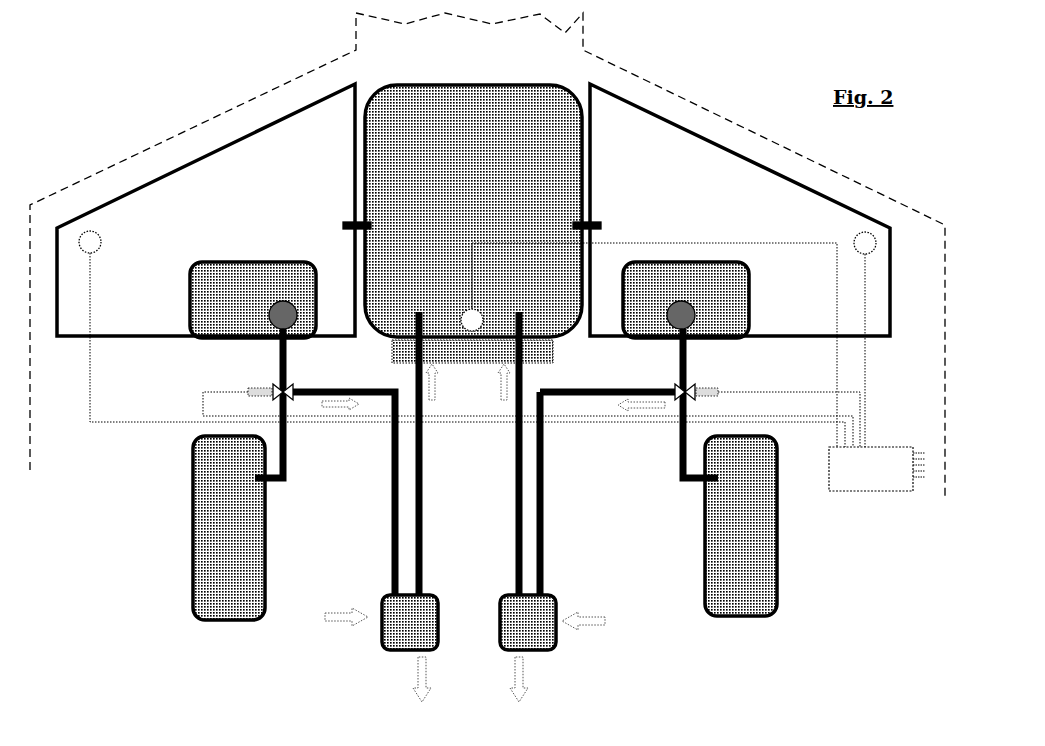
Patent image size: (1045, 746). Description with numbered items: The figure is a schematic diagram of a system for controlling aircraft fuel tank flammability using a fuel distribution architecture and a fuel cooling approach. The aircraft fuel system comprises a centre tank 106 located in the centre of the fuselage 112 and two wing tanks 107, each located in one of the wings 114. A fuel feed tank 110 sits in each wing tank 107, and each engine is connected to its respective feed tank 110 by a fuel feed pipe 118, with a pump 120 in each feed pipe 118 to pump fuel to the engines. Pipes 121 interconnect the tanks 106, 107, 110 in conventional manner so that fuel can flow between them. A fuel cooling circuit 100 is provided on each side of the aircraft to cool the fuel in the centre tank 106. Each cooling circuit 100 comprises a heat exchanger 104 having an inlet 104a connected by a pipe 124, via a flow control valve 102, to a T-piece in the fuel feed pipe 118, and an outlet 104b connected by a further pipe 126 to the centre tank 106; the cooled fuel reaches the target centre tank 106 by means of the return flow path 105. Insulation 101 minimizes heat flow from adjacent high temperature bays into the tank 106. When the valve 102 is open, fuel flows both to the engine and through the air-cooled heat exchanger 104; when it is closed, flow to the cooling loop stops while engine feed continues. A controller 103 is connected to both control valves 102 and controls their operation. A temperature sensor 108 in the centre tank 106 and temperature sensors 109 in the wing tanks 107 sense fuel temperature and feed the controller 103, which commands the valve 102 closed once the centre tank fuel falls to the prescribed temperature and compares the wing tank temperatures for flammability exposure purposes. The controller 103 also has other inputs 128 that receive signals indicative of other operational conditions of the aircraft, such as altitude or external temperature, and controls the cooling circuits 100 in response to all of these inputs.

The fuel cooling circuit 100 is at (487, 374).
The insulation 101 is at (489, 351).
The flow control valve 102 is at (482, 377).
The controller 103 is at (871, 480).
The heat exchanger 104 is at (440, 638).
The inlet 104a is at (392, 597).
The outlet 104b is at (423, 596).
The return flow path 105 is at (425, 515).
The centre tank 106 is at (473, 211).
The wing tanks 107 is at (473, 210).
The temperature sensor 108 is at (487, 314).
The temperature sensors 109 is at (477, 240).
The fuel feed tank 110 is at (469, 300).
The fuselage 112 is at (356, 28).
The wings 114 is at (473, 367).
The fuel feed pipe 118 is at (288, 452).
The pump 120 is at (292, 306).
The pipes 121 is at (352, 216).
The pipe 124 is at (392, 500).
The further pipe 126 is at (469, 453).
The other inputs 128 is at (923, 500).